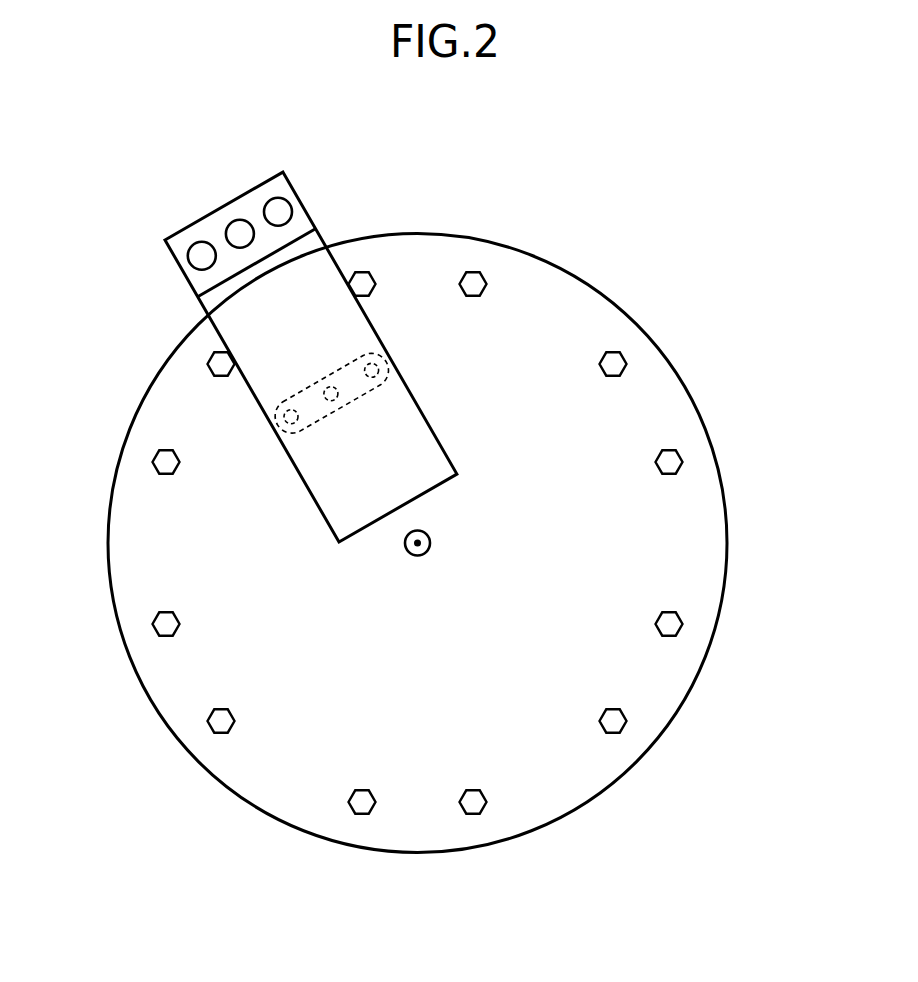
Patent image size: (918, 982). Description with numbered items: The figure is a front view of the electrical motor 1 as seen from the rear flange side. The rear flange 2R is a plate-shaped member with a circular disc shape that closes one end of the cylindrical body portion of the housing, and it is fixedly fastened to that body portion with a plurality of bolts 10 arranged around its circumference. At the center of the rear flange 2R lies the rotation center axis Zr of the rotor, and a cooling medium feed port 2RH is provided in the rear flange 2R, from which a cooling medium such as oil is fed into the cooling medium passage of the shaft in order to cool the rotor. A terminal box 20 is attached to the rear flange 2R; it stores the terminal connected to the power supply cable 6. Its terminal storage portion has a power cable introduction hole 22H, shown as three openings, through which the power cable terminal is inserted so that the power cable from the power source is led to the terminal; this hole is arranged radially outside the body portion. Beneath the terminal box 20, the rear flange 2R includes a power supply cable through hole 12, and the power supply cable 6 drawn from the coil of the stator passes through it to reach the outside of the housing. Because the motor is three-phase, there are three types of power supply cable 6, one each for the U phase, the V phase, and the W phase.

The electrical motor 1 is at (86, 170).
The rear flange 2R is at (243, 779).
The cooling medium feed port 2RH is at (426, 552).
The rotation center axis Zr is at (436, 526).
The terminal box 20 is at (188, 199).
The power cable introduction hole 22H is at (200, 242).
The power supply cable through hole 12 is at (384, 386).
The power supply cable 6 is at (288, 424).
The bolt 10 is at (473, 272).